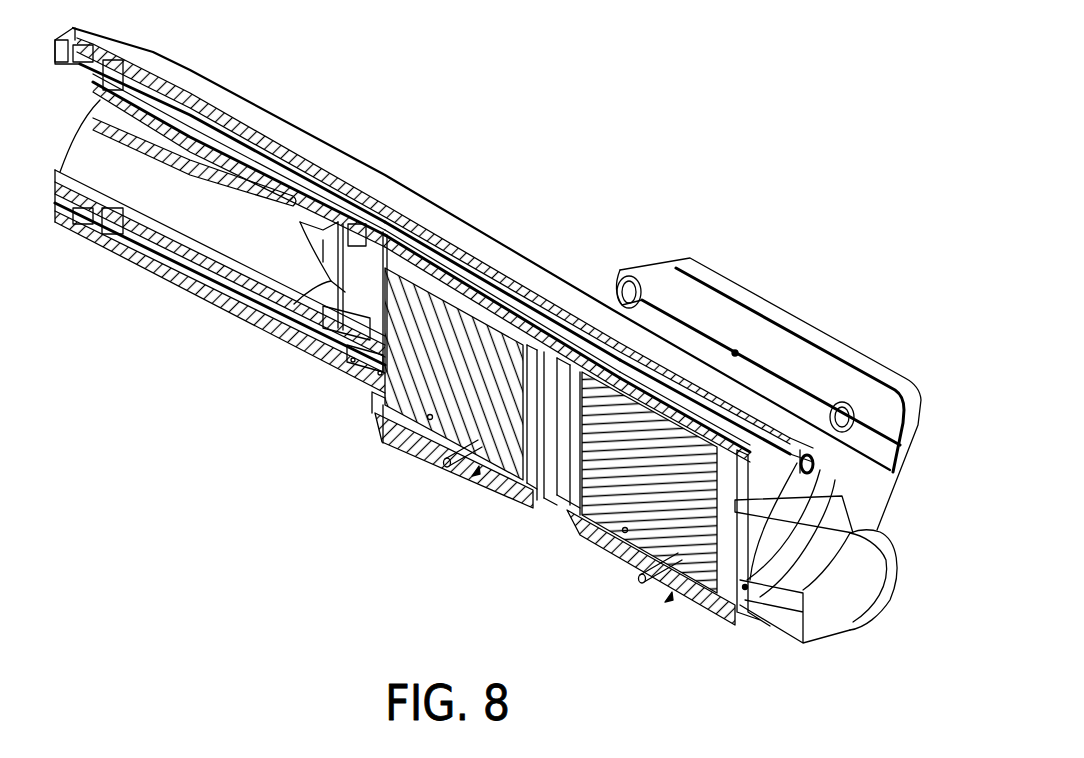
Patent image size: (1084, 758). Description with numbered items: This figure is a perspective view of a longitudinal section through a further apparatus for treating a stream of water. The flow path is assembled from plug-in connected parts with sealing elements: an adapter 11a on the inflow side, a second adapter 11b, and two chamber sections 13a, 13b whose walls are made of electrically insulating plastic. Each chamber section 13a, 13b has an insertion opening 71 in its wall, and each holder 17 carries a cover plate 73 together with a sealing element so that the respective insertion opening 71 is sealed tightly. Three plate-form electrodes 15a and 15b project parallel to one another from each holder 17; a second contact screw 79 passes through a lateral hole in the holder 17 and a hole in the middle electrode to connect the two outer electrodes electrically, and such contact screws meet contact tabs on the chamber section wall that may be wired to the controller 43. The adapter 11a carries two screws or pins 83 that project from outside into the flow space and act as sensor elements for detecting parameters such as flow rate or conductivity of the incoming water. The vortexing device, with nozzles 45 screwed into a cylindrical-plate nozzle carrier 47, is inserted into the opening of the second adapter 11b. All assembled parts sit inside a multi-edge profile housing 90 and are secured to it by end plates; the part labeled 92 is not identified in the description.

The adapter on the inflow side 11a is at (801, 455).
The second adapter 11b is at (247, 180).
The first chamber section 13a is at (600, 350).
The chamber section 13b is at (494, 290).
The electrode 15a is at (738, 528).
The electrode 15b is at (532, 405).
The holder 17 is at (474, 473).
The controller 43 is at (793, 326).
The nozzle 45 is at (318, 325).
The nozzle carrier 47 is at (292, 335).
The insertion opening 71 is at (382, 378).
The cover plate 73 is at (396, 430).
The second contact screw 79 is at (644, 580).
The screws or pins 83 is at (746, 590).
The profile housing 90 is at (452, 240).
The elbow 92 is at (857, 497).